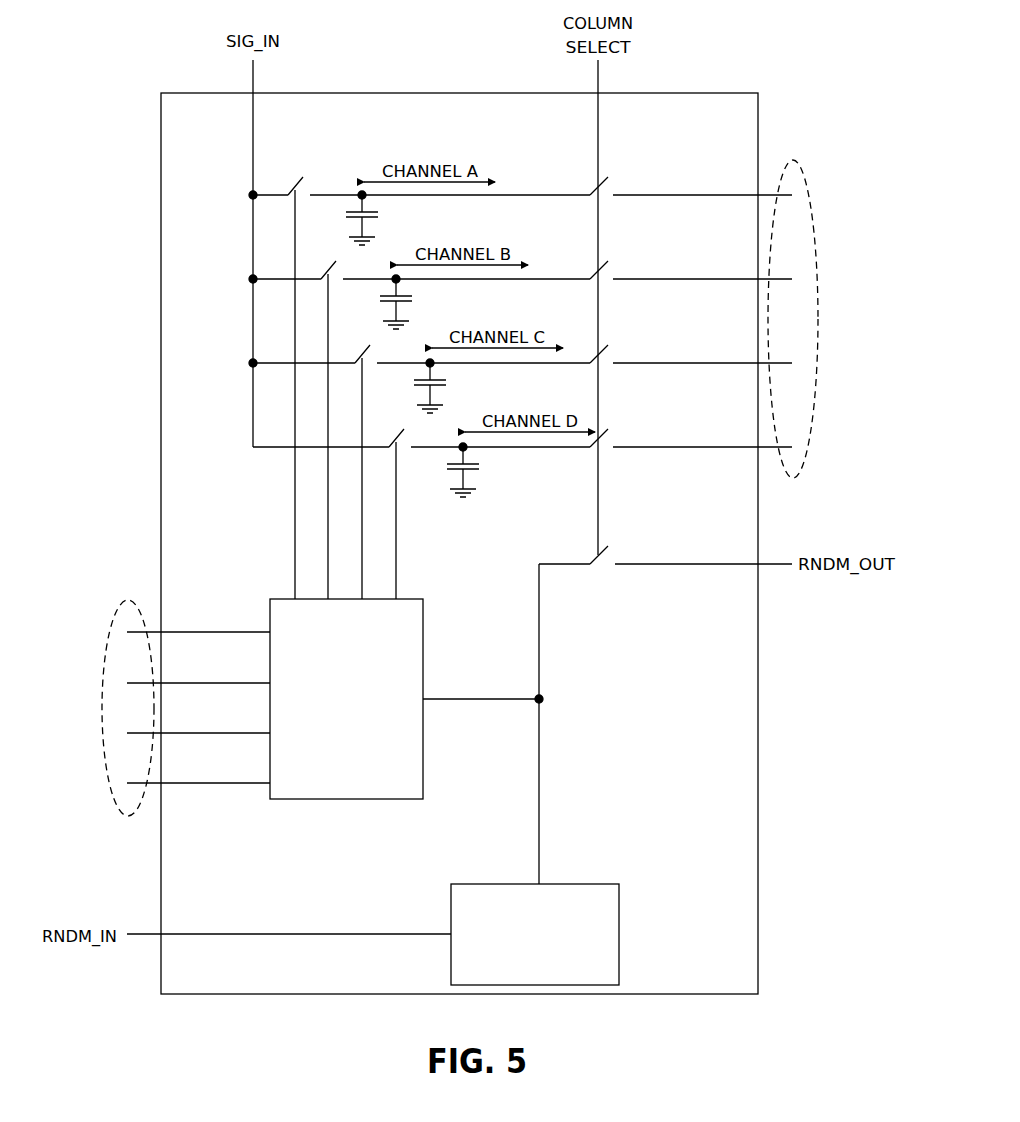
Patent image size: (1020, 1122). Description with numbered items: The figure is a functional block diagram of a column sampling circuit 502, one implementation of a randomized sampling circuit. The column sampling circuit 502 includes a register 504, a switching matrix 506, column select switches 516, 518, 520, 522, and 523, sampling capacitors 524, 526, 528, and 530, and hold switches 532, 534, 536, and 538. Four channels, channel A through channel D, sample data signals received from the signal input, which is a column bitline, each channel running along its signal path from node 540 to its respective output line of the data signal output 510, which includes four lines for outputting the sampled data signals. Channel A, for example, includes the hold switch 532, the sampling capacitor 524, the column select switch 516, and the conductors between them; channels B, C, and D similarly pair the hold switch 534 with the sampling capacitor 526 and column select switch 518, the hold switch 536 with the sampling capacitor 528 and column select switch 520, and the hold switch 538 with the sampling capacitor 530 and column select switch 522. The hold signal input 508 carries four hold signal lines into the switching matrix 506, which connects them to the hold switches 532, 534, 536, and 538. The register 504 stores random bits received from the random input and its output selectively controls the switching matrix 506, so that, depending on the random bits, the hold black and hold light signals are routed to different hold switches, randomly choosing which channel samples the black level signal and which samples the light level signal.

The column sampling circuit 502 is at (459, 543).
The register 504 is at (535, 774).
The switching matrix 506 is at (404, 699).
The hold signal input 508 is at (120, 600).
The data signal output 510 is at (793, 160).
The column select switch 516 is at (608, 176).
The column select switch 518 is at (608, 260).
The column select switch 520 is at (608, 344).
The column select switch 522 is at (608, 428).
The column select switch 523 is at (608, 546).
The sampling capacitor 524 is at (380, 215).
The sampling capacitor 526 is at (414, 299).
The sampling capacitor 528 is at (448, 383).
The sampling capacitor 530 is at (481, 467).
The hold switch 532 is at (300, 191).
The hold switch 534 is at (333, 275).
The hold switch 536 is at (367, 359).
The hold switch 538 is at (401, 443).
The node 540 is at (253, 195).